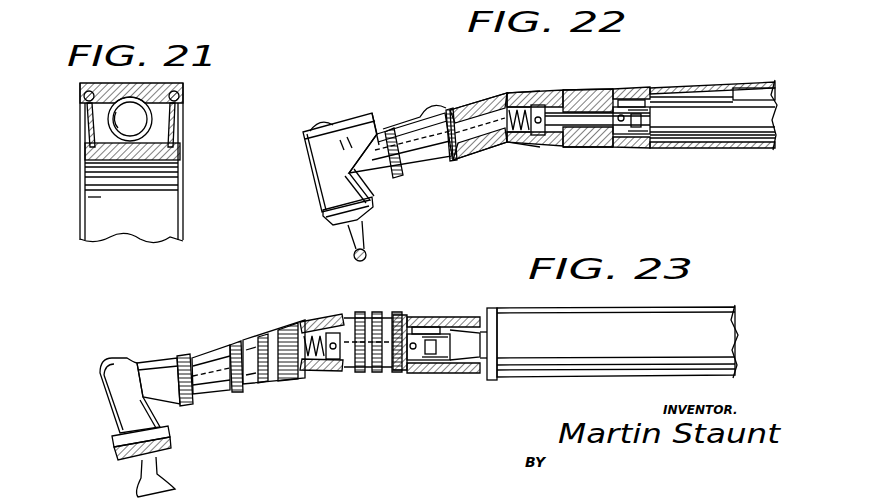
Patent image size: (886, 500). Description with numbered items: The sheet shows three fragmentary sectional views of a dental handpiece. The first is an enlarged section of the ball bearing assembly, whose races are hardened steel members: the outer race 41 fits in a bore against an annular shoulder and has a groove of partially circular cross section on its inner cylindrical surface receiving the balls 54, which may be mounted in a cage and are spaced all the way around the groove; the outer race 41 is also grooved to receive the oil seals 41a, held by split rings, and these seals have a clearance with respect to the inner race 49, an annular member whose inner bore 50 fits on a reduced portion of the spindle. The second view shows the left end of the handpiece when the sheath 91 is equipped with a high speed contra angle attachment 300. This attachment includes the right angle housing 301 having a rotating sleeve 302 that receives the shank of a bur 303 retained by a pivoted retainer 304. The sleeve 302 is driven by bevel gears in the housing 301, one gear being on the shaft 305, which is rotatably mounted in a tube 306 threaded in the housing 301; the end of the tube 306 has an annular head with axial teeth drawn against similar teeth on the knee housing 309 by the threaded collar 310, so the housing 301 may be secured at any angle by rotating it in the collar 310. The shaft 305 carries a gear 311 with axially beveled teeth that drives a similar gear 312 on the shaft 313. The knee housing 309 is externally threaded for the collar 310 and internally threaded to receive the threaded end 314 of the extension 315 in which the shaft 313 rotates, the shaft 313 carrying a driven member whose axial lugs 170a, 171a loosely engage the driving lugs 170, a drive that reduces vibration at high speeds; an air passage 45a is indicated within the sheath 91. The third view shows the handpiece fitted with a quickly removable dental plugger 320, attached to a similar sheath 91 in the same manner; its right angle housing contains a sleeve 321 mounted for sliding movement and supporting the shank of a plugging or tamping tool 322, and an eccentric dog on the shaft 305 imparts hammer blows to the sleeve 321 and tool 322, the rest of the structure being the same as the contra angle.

In FIG. 21, the outer race 41 is at (183, 84).
In FIG. 21, the oil seals 41a is at (88, 130).
In FIG. 21, the balls 54 is at (143, 118).
In FIG. 21, the inner race 49 is at (183, 151).
In FIG. 21, the inner bore 50 is at (143, 162).
In FIG. 22, the contra-angle attachment 300 is at (538, 90).
In FIG. 22, the right angle housing 301 is at (328, 150).
In FIG. 23, the right angle housing 301 is at (128, 380).
In FIG. 22, the rotating sleeve 302 is at (341, 216).
In FIG. 22, the bur 303 is at (363, 240).
In FIG. 22, the pivoted retainer 304 is at (397, 112).
In FIG. 22, the shaft 305 is at (427, 150).
In FIG. 23, the shaft 305 is at (212, 381).
In FIG. 22, the tube 306 is at (417, 170).
In FIG. 23, the tube 306 is at (193, 407).
In FIG. 22, the knee housing 309 is at (502, 93).
In FIG. 23, the knee housing 309 is at (296, 318).
In FIG. 22, the threaded collar 310 is at (447, 110).
In FIG. 23, the threaded collar 310 is at (252, 336).
In FIG. 22, the gear 311 is at (513, 148).
In FIG. 23, the gear 311 is at (310, 373).
In FIG. 22, the gear 312 is at (538, 138).
In FIG. 23, the gear 312 is at (334, 326).
In FIG. 22, the shaft 313 is at (586, 114).
In FIG. 23, the shaft 313 is at (339, 361).
In FIG. 22, the threaded end 314 is at (566, 101).
In FIG. 23, the threaded end 314 is at (408, 320).
In FIG. 22, the extension 315 is at (597, 148).
In FIG. 23, the extension 315 is at (427, 318).
In FIG. 22, the driving lugs 170 is at (644, 134).
In FIG. 23, the driving lugs 170 is at (434, 355).
In FIG. 22, the axial lug 170a is at (640, 100).
In FIG. 23, the axial lug 170a is at (436, 330).
In FIG. 22, the axial lug 171a is at (637, 134).
In FIG. 23, the axial lug 171a is at (428, 354).
In FIG. 22, the sheath 91 is at (753, 82).
In FIG. 23, the sheath 91 is at (656, 332).
In FIG. 22, the air passage 45a is at (718, 115).
In FIG. 23, the dental plugger 320 is at (203, 350).
In FIG. 23, the sleeve 321 is at (116, 442).
In FIG. 23, the plugging or tamping tool 322 is at (158, 478).